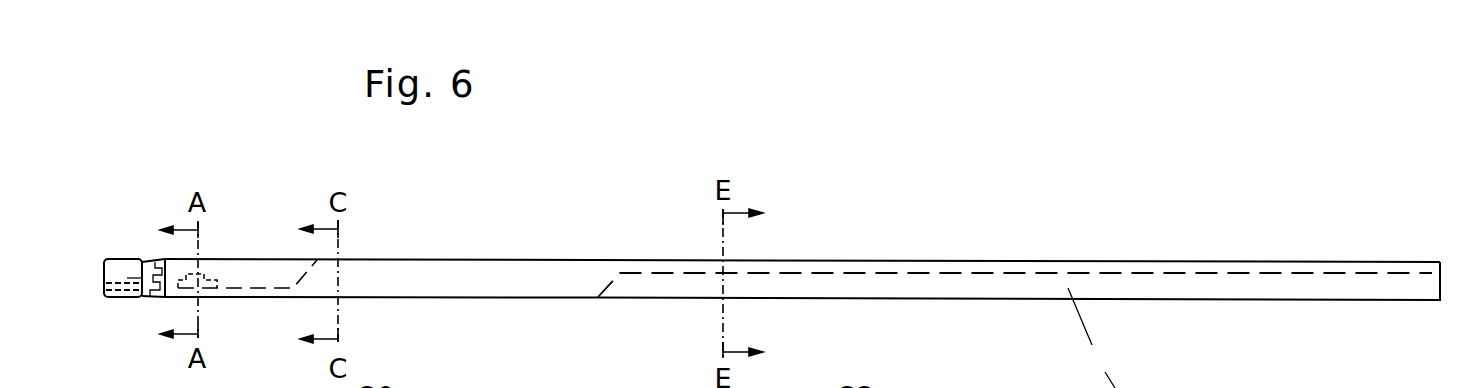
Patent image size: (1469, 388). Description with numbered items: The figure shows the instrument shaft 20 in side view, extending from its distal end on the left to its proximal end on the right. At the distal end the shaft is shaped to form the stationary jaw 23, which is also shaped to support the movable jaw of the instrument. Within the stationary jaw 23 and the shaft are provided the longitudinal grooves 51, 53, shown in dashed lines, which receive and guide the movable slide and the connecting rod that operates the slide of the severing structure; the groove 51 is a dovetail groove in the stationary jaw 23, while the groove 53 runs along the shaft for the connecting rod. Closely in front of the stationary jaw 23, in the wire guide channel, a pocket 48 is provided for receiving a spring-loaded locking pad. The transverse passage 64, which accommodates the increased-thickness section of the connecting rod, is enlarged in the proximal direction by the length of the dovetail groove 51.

The instrument shaft 20 is at (791, 323).
The stationary jaw 23 is at (116, 268).
The pocket 48 is at (200, 277).
The longitudinal groove 51 is at (117, 297).
The longitudinal groove 53 is at (257, 288).
The transverse passage 64 is at (517, 270).